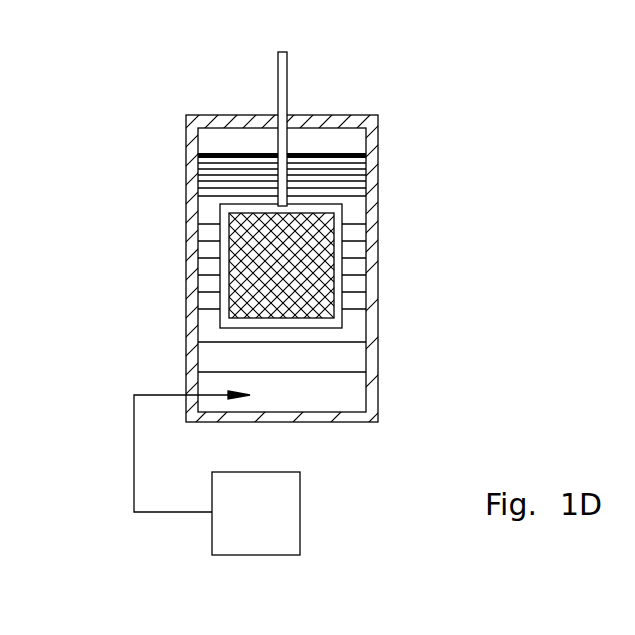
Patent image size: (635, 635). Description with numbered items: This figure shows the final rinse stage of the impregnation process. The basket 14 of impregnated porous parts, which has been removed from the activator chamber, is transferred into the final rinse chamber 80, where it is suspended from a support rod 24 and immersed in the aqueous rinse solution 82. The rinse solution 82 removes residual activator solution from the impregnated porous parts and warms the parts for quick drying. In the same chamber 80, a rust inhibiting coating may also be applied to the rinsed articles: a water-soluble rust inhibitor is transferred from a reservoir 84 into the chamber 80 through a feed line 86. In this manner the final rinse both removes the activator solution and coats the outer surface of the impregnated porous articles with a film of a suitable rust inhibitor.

The basket 14 is at (320, 218).
The support rod 24 is at (287, 88).
The final rinse chamber 80 is at (375, 273).
The aqueous rinse solution 82 is at (320, 393).
The reservoir 84 is at (278, 530).
The feed line 86 is at (157, 515).